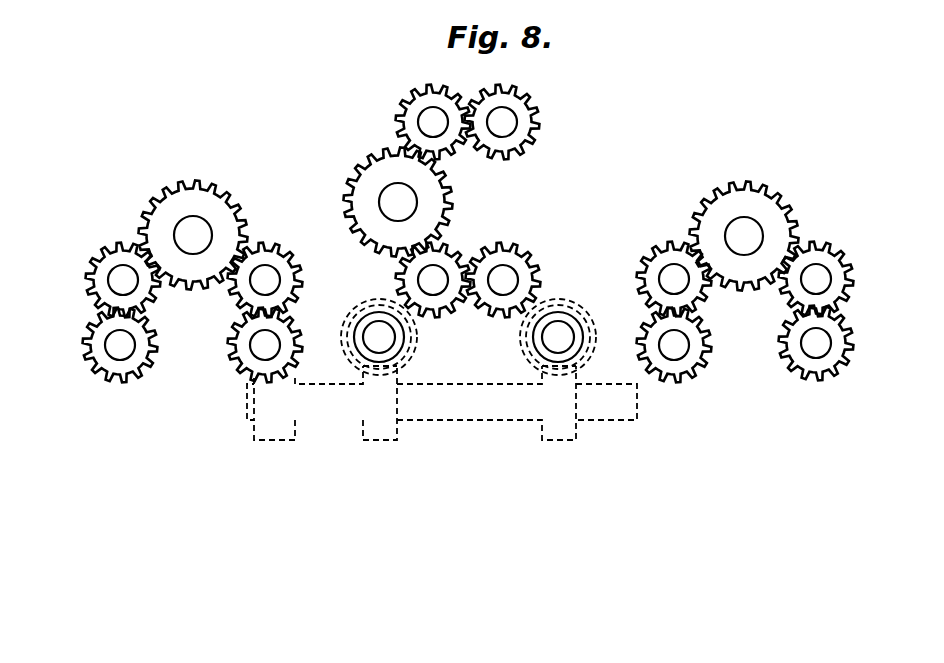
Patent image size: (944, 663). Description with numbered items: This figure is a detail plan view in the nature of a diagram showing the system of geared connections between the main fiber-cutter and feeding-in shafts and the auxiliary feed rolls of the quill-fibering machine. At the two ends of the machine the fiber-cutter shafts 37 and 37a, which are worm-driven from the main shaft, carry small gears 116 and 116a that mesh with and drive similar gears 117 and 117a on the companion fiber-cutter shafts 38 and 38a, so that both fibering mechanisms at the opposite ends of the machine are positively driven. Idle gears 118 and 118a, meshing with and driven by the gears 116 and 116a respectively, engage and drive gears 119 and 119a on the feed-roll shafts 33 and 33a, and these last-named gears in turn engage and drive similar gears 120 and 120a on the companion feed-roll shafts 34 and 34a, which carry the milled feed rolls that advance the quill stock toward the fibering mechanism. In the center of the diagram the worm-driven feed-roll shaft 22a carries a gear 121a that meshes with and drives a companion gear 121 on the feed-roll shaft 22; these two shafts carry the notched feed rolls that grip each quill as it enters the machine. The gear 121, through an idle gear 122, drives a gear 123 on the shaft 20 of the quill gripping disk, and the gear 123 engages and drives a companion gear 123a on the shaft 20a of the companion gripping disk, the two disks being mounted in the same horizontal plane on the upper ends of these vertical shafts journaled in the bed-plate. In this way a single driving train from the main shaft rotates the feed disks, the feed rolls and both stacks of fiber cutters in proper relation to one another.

The shaft 20 is at (420, 122).
The shaft 20a is at (507, 120).
The feed-roll shaft 22 is at (437, 304).
The feed-roll shaft 22a is at (505, 281).
The feed-roll shaft 33 is at (275, 279).
The feed-roll shaft 33a is at (667, 280).
The feed-roll shaft 34 is at (270, 343).
The feed-roll shaft 34a is at (675, 348).
The fiber-cutter shaft 37 is at (115, 275).
The fiber-cutter shaft 37a is at (825, 273).
The fiber-cutter shaft 38 is at (127, 345).
The fiber-cutter shaft 38a is at (827, 342).
The small gear 116 is at (88, 290).
The small gear 116a is at (853, 288).
The gear 117 is at (86, 353).
The gear 117a is at (850, 357).
The idle gear 118 is at (212, 194).
The idle gear 118a is at (752, 196).
The gear 119 is at (292, 258).
The gear 119a is at (673, 248).
The gear 120 is at (242, 348).
The gear 120a is at (640, 333).
The gear 121 is at (412, 275).
The gear 121a is at (530, 240).
The idle gear 122 is at (355, 187).
The gear 123 is at (398, 115).
The gear 123a is at (507, 95).